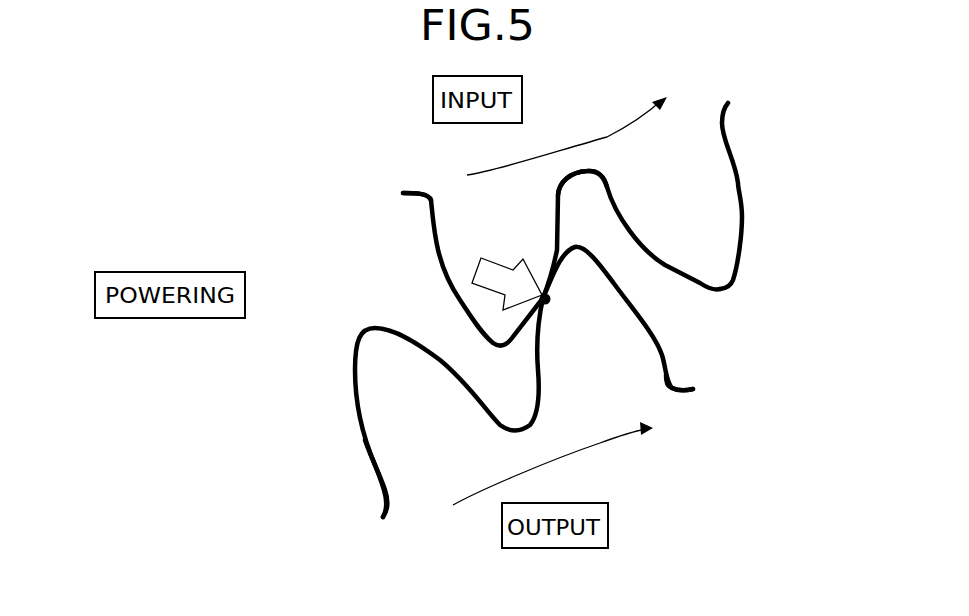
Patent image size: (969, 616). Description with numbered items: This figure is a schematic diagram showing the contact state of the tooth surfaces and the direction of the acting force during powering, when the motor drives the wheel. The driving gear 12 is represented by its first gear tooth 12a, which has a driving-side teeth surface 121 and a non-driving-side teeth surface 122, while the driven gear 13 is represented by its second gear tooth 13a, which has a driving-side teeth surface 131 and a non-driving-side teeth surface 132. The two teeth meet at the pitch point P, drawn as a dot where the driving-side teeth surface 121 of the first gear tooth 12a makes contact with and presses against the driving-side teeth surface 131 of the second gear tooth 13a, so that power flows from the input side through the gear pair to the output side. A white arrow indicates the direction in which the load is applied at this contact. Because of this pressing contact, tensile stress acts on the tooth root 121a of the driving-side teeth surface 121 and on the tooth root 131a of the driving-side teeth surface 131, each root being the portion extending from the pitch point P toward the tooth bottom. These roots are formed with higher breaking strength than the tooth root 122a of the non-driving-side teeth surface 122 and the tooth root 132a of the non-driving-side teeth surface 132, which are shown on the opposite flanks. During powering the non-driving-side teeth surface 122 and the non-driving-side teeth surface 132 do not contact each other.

The driving gear 12 is at (758, 130).
The first gear tooth 12a is at (473, 223).
The driving-side teeth surface 121 is at (562, 232).
The tooth root 121a is at (563, 190).
The non-driving-side teeth surface 122 is at (433, 270).
The tooth root 122a is at (430, 197).
The driven gear 13 is at (738, 338).
The second gear tooth 13a is at (607, 348).
The driving-side teeth surface 131 is at (530, 353).
The tooth root 131a is at (537, 408).
The non-driving-side teeth surface 132 is at (648, 322).
The tooth root 132a is at (673, 385).
The pitch point P is at (546, 300).